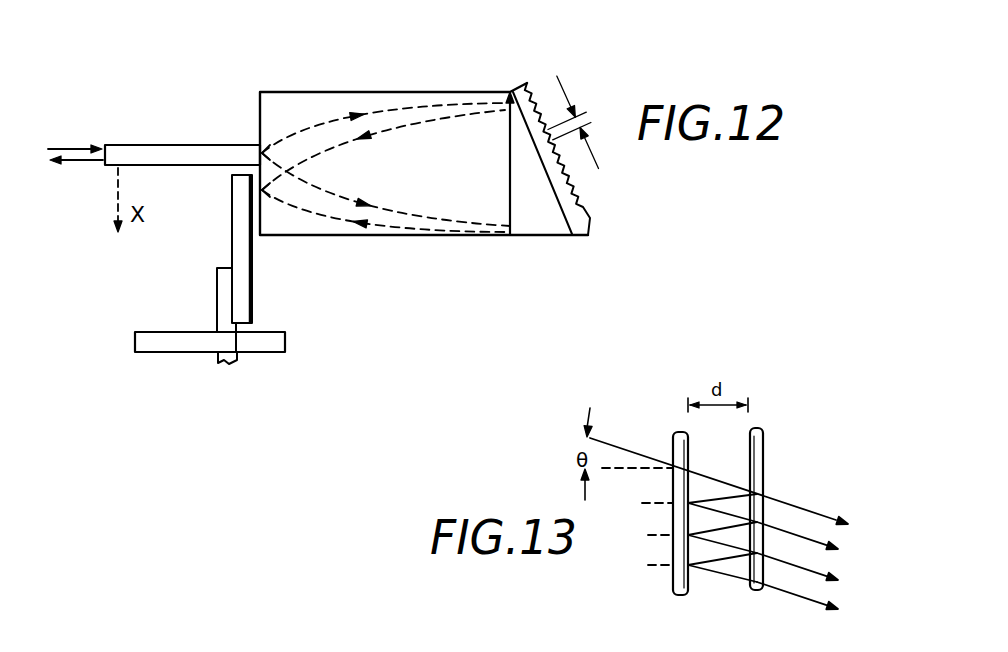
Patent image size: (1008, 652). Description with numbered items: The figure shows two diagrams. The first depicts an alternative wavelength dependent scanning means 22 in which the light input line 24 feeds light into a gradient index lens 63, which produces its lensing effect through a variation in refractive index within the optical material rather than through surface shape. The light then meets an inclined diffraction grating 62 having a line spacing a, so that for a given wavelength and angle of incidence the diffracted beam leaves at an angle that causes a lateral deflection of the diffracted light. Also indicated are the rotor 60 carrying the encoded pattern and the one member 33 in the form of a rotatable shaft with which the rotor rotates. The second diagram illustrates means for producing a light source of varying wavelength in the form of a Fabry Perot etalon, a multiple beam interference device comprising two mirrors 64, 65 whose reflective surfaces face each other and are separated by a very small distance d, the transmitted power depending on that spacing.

In FIG. 12, the light input line 24 is at (155, 153).
In FIG. 12, the wavelength dependent scanning means 22 is at (433, 248).
In FIG. 12, the gradient index lens 63 is at (434, 175).
In FIG. 12, the diffraction grating 62 is at (583, 203).
In FIG. 12, the rotor 60 is at (243, 262).
In FIG. 12, the one member 33 is at (183, 342).
In FIG. 13, the mirror 64 is at (677, 577).
In FIG. 13, the mirror 65 is at (757, 462).